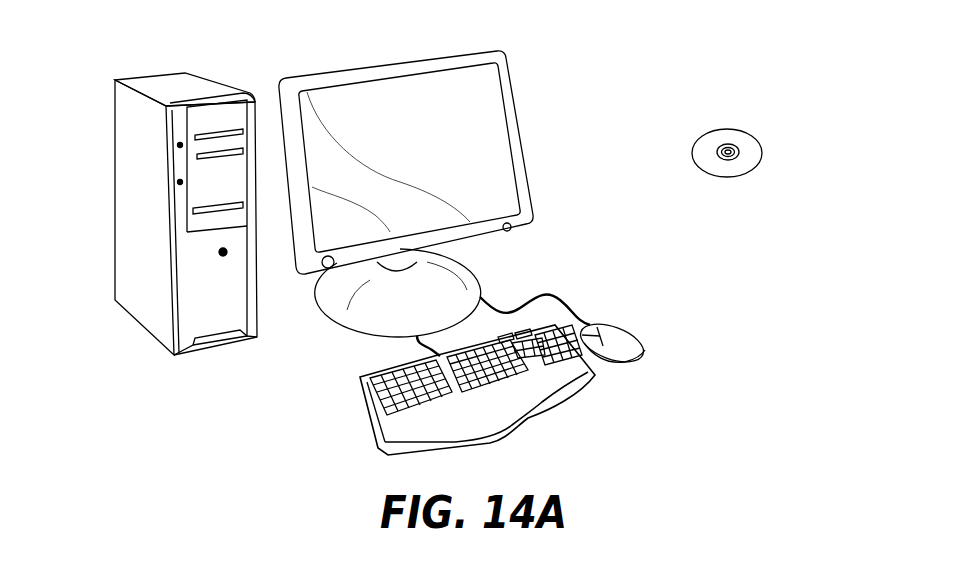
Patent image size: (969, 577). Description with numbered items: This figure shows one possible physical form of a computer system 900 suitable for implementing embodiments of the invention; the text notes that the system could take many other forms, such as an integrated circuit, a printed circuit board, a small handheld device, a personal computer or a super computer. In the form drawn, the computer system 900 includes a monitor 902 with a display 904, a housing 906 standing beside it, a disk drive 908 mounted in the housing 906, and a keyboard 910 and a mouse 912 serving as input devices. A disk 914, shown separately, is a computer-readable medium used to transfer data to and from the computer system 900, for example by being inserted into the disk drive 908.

The computer system 900 is at (645, 35).
The monitor 902 is at (525, 162).
The display 904 is at (475, 95).
The housing 906 is at (170, 83).
The disk drive 908 is at (243, 212).
The keyboard 910 is at (373, 422).
The mouse 912 is at (637, 332).
The disk 914 is at (747, 129).